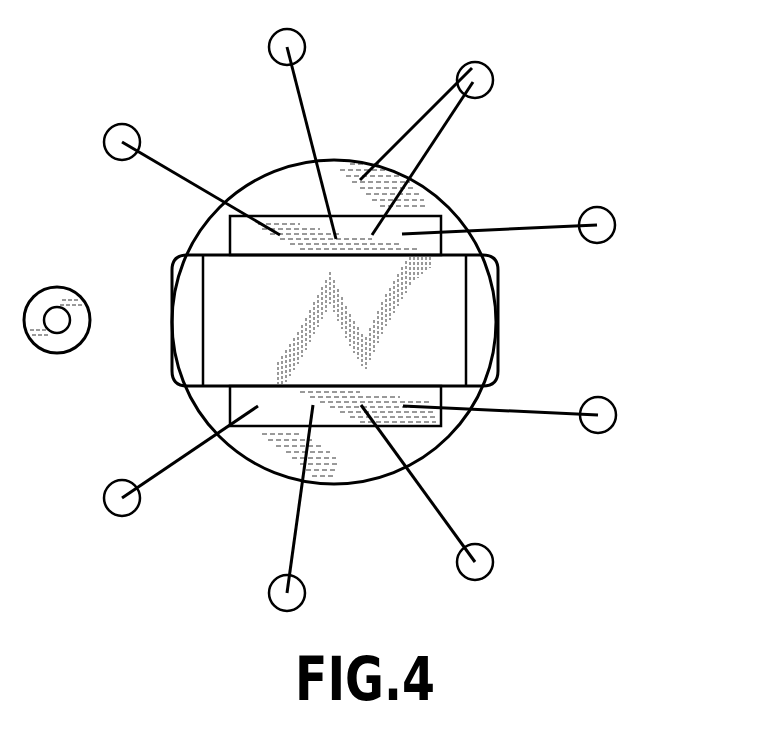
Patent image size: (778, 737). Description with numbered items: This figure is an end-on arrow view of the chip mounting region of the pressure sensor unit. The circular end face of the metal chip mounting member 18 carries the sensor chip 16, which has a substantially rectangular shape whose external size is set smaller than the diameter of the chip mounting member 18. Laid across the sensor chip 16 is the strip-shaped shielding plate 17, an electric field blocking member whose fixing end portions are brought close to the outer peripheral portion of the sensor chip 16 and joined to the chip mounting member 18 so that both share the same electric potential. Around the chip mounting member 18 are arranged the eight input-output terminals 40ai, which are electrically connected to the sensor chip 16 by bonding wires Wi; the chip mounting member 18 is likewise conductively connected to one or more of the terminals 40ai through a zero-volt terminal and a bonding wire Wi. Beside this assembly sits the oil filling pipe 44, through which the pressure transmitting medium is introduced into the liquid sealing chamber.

The sensor chip 16 is at (335, 415).
The shielding plate 17 is at (485, 313).
The chip mounting member 18 is at (258, 445).
The oil filling pipe 44 is at (55, 298).
The input-output terminals 40ai is at (485, 73).
The bonding wire Wi is at (430, 113).